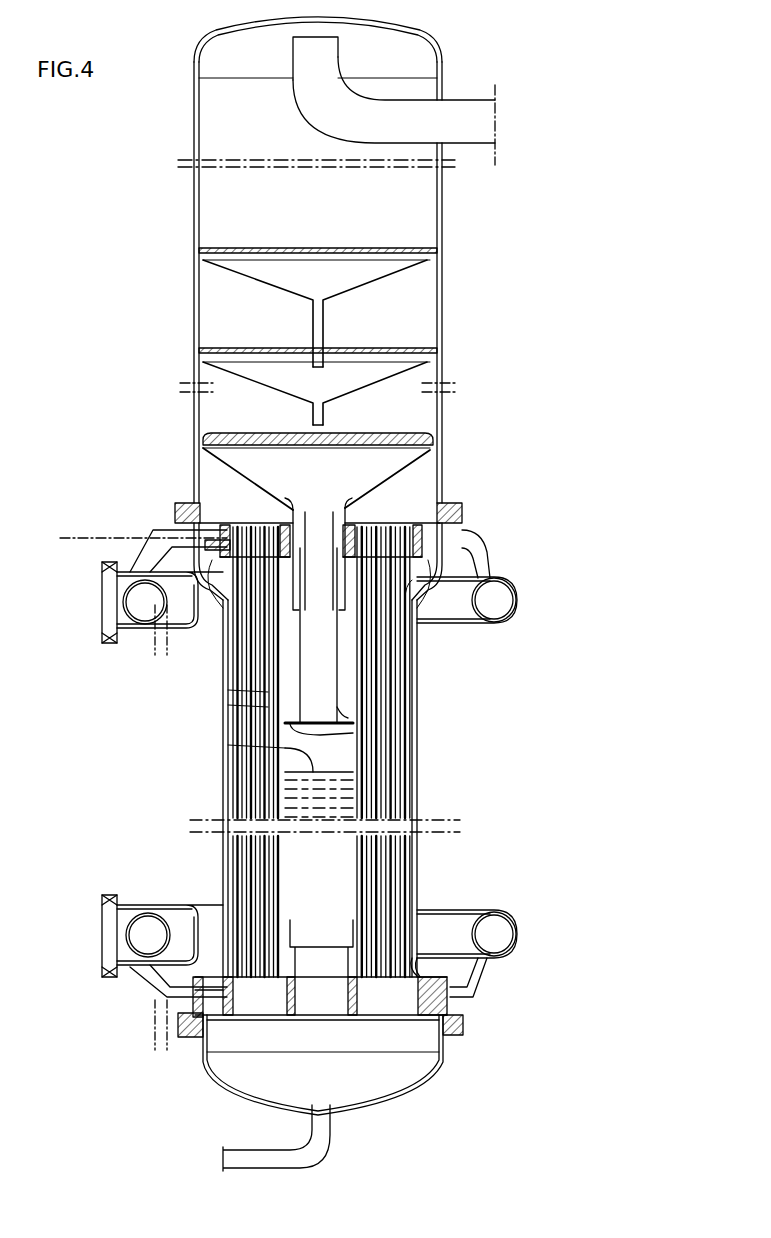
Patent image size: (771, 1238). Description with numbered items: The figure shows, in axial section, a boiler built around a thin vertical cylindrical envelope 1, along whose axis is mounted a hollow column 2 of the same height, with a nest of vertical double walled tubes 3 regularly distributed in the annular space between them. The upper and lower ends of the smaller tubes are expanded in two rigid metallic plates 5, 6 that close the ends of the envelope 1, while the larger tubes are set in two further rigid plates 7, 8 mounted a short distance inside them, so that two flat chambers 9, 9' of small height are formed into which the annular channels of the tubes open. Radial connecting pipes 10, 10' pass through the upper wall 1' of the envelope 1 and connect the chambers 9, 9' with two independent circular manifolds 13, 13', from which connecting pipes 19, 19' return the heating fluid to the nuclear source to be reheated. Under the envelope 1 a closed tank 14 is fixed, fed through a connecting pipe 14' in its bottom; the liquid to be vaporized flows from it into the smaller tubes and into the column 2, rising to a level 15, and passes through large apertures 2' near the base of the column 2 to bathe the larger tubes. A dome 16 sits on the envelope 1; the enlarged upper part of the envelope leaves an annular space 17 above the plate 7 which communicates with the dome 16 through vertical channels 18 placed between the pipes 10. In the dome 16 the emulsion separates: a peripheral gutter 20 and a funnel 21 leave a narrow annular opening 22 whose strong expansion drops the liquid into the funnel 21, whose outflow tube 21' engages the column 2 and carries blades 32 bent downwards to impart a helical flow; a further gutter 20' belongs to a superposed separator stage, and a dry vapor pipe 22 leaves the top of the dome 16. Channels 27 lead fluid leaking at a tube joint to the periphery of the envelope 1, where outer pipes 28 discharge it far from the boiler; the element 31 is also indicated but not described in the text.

The envelope 1 is at (332, 788).
The upper wall of the envelope 1' is at (206, 598).
The hollow column 2 is at (363, 772).
The apertures 2' is at (321, 948).
The double walled tubes 3 is at (266, 874).
The rigid metallic plate 5 is at (410, 522).
The rigid metallic plate 6 is at (420, 1016).
The rigid metallic plate 7 is at (430, 600).
The rigid metallic plate 8 is at (418, 968).
The flat chamber 9 is at (175, 510).
The flat chamber 9' is at (190, 1023).
The radial connecting pipe 10 is at (289, 545).
The radial connecting pipe 10' is at (325, 985).
The circular manifold 13 is at (318, 621).
The circular manifold 13' is at (321, 915).
The closed tank 14 is at (311, 1065).
The connecting pipe 14' is at (276, 1138).
The level 15 is at (280, 748).
The dome 16 is at (443, 312).
The annular space 17 is at (218, 572).
The vertical channels 18 is at (430, 553).
The connecting pipe 19 is at (144, 602).
The connecting pipe 19' is at (143, 936).
The peripheral gutter 20 is at (294, 341).
The lower tray 20' is at (294, 351).
The funnel 21 is at (345, 472).
The outflow tube 21' is at (342, 532).
The narrow annular opening 22 is at (466, 104).
The channel 27 is at (212, 528).
The outer pipes 28 is at (167, 655).
The support 31 is at (268, 707).
The blades 32 is at (353, 733).